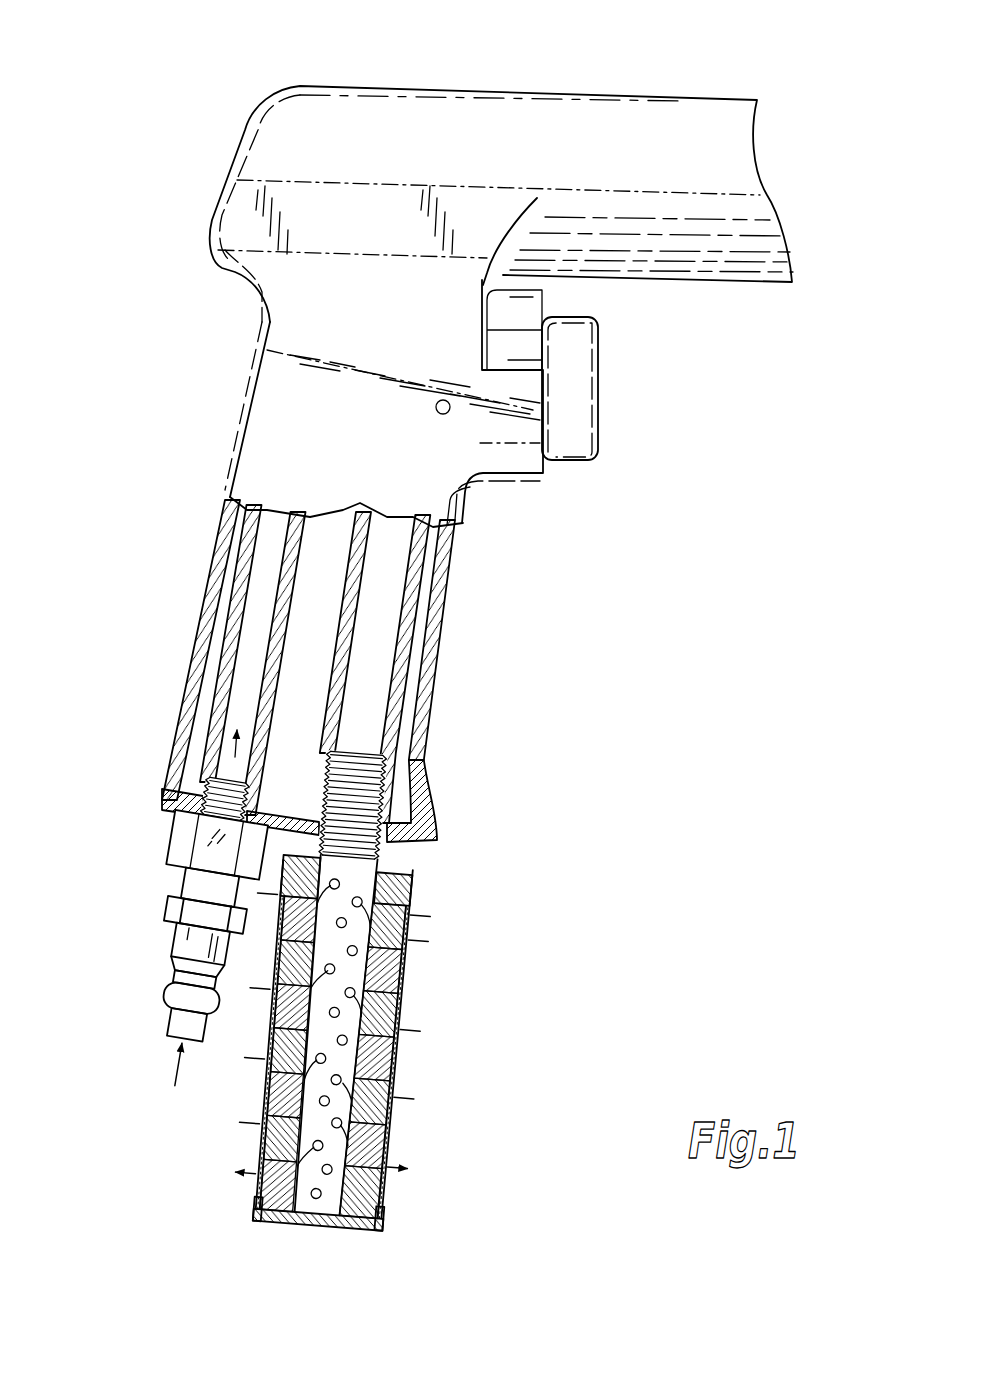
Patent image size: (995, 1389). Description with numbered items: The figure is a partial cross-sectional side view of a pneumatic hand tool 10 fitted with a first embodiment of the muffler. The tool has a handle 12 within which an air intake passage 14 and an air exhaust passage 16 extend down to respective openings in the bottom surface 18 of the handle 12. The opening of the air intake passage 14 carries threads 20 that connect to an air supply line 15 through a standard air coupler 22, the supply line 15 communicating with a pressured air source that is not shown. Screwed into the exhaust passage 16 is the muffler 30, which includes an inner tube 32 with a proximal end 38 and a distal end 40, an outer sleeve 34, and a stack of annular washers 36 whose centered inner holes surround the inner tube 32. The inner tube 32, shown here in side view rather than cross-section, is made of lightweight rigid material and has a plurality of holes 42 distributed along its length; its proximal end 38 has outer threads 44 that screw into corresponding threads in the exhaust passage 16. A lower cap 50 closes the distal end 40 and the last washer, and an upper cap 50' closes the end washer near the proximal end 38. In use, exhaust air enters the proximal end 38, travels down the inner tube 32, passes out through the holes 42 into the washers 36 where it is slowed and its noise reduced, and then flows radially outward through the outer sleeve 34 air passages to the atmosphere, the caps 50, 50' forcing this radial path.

The pneumatic hand tool 10 is at (215, 84).
The handle 12 is at (205, 606).
The air intake passage 14 is at (250, 667).
The air exhaust passage 16 is at (370, 647).
The bottom surface 18 is at (404, 846).
The threads 20 is at (205, 797).
The air coupler 22 is at (176, 940).
The air supply line 15 is at (172, 1020).
The proximal end 38 is at (386, 771).
The outer threads 44 is at (390, 797).
The muffler 30 is at (339, 1038).
The inner tube 32 is at (301, 1213).
The outer sleeve 34 is at (395, 1050).
The washers 36 is at (397, 999).
The distal end 40 is at (328, 1212).
The holes 42 is at (398, 1085).
The lower cap 50 is at (248, 1217).
The upper cap 50' is at (402, 893).